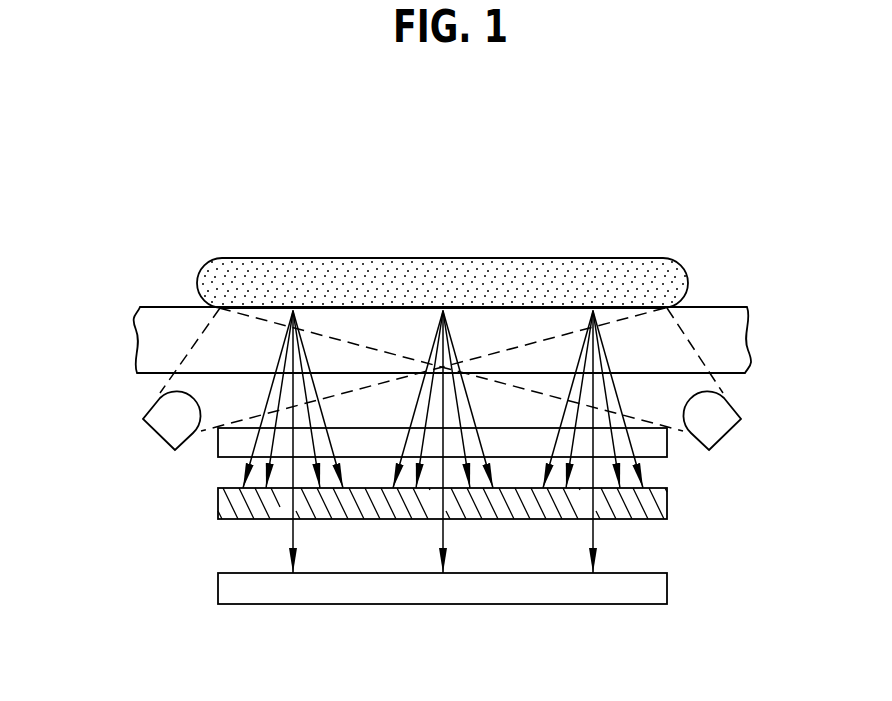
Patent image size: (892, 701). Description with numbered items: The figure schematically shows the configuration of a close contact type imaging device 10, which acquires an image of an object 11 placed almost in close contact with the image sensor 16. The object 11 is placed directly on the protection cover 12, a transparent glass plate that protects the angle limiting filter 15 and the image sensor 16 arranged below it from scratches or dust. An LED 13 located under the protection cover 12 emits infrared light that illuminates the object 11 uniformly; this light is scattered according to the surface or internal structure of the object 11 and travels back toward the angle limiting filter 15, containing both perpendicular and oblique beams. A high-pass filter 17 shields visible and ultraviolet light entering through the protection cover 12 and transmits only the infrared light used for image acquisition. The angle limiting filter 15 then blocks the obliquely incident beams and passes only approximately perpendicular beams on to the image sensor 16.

The close contact type imaging device 10 is at (165, 217).
The object 11 is at (620, 270).
The protection cover 12 is at (163, 313).
The LED 13 is at (143, 418).
The angle limiting filter 15 is at (667, 503).
The image sensor 16 is at (218, 590).
The high-pass filter 17 is at (218, 452).